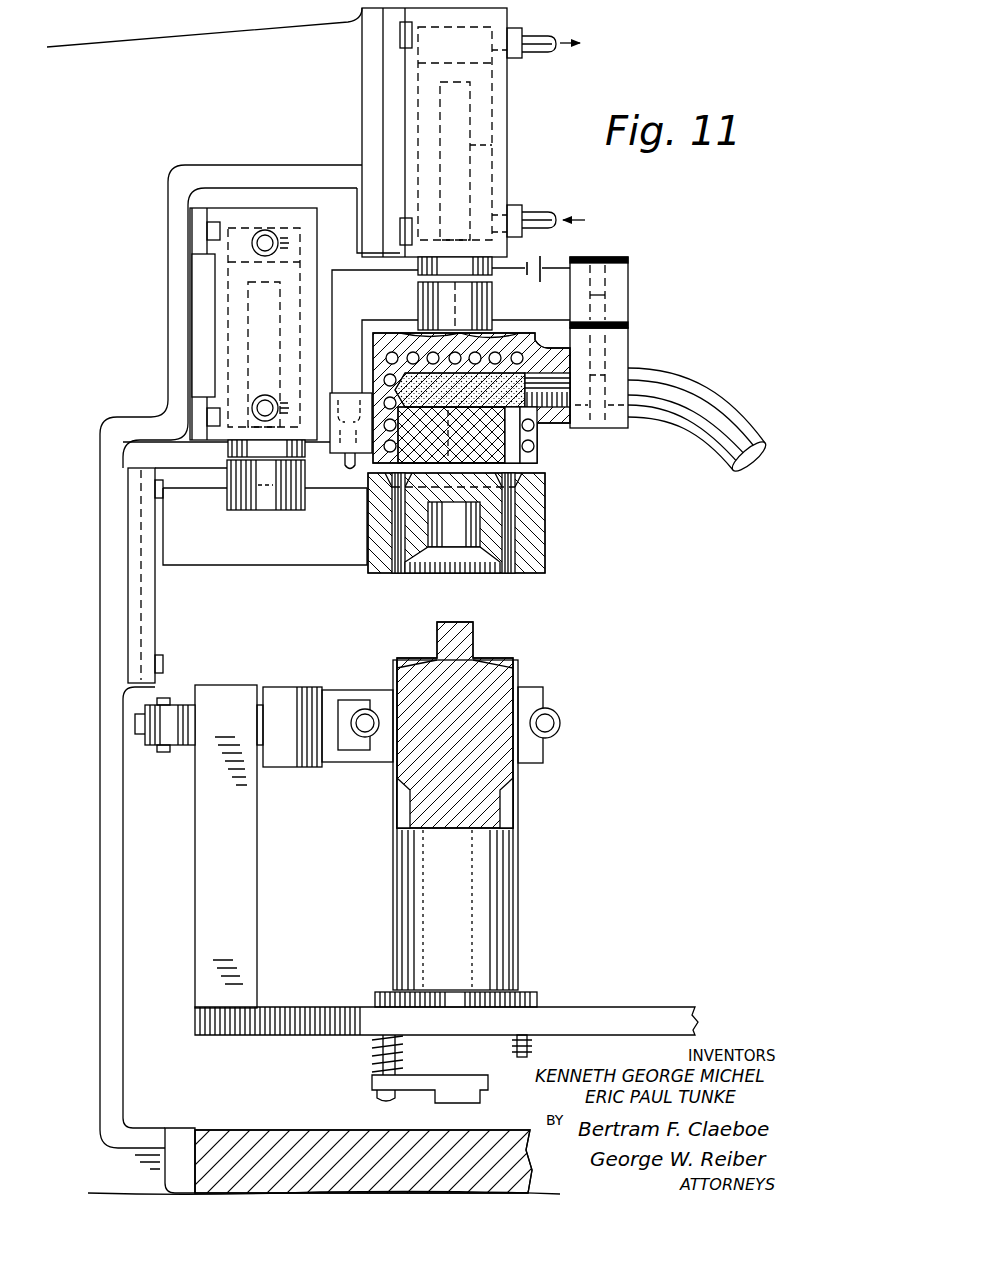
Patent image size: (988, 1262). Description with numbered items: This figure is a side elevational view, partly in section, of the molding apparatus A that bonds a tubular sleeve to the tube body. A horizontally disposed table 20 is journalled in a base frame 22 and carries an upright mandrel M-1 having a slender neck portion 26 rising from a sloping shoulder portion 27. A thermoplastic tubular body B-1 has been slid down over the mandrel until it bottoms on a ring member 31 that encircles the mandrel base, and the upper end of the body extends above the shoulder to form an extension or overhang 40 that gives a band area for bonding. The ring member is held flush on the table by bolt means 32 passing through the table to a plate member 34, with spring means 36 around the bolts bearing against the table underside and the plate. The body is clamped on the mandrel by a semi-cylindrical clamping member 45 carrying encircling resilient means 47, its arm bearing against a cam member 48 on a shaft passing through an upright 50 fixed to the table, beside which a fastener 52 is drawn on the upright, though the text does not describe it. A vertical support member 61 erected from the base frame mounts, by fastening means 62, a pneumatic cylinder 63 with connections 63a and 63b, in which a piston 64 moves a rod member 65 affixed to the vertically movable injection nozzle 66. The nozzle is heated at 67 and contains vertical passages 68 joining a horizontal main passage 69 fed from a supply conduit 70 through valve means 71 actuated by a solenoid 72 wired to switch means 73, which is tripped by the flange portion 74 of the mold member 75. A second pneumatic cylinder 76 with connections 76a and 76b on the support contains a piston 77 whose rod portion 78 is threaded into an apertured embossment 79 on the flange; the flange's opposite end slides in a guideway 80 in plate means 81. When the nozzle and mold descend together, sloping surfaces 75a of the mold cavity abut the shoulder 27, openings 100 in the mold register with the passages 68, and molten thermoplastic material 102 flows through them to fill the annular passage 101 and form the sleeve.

The table 20 is at (610, 1013).
The base frame 22 is at (266, 1135).
The neck portion 26 is at (462, 636).
The shoulder portion 27 is at (483, 662).
The ring member 31 is at (530, 992).
The bolt means 32 is at (515, 1050).
The plate member 34 is at (425, 1080).
The spring means 36 is at (372, 1055).
The extension or overhang 40 is at (520, 668).
The clamping member 45 is at (548, 706).
The resilient means 47 is at (562, 721).
The cam member 48 is at (284, 692).
The upright 50 is at (248, 850).
The bolt 52 is at (150, 738).
The vertical support member 61 is at (125, 870).
The fastening means 62 is at (402, 32).
The cylinder 63 is at (500, 118).
The connection 63a is at (548, 40).
The connection 63b is at (528, 220).
The piston 64 is at (478, 86).
The rod member 65 is at (475, 148).
The injection nozzle 66 is at (522, 334).
The heating 67 is at (413, 350).
The passages 68 is at (522, 455).
The main passage 69 is at (540, 360).
The supply conduit 70 is at (700, 385).
The valve means 71 is at (608, 380).
The solenoid 72 is at (622, 293).
The switch means 73 is at (336, 440).
The flange portion 74 is at (318, 478).
The mold member 75 is at (530, 550).
The sloping surfaces 75a is at (412, 555).
The cylinder 76 is at (312, 278).
The connection 76a is at (265, 238).
The connection 76b is at (265, 396).
The piston 77 is at (228, 277).
The rod portion 78 is at (248, 320).
The apertured embossment 79 is at (250, 493).
The guideway 80 is at (137, 580).
The plate means 81 is at (150, 637).
The openings 100 is at (520, 480).
The annular passage 101 is at (390, 560).
The molten thermoplastic material 102 is at (536, 432).
The molding apparatus A is at (605, 240).
The mandrel M-1 is at (440, 792).
The tubular body B-1 is at (518, 800).